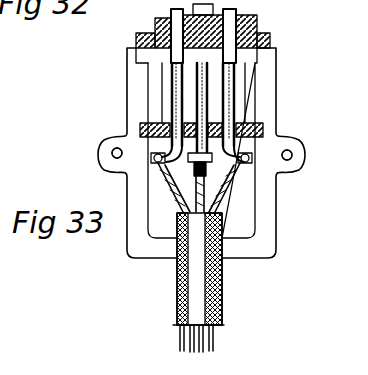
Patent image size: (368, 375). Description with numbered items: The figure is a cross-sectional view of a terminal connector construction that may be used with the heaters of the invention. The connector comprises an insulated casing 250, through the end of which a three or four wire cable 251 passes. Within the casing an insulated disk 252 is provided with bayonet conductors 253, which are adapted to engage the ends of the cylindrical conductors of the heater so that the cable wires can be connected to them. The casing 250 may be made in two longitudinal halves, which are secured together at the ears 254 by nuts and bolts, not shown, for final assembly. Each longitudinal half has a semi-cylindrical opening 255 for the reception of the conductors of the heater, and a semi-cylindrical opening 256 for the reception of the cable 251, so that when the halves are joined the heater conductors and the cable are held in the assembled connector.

The insulated casing 250 is at (270, 96).
The three or four wire cable 251 is at (222, 283).
The insulated disk 252 is at (263, 126).
The bayonet conductors 253 is at (170, 121).
The ears 254 is at (111, 152).
The semi-cylindrical opening 255 is at (258, 70).
The semi-cylindrical opening 256 is at (176, 258).